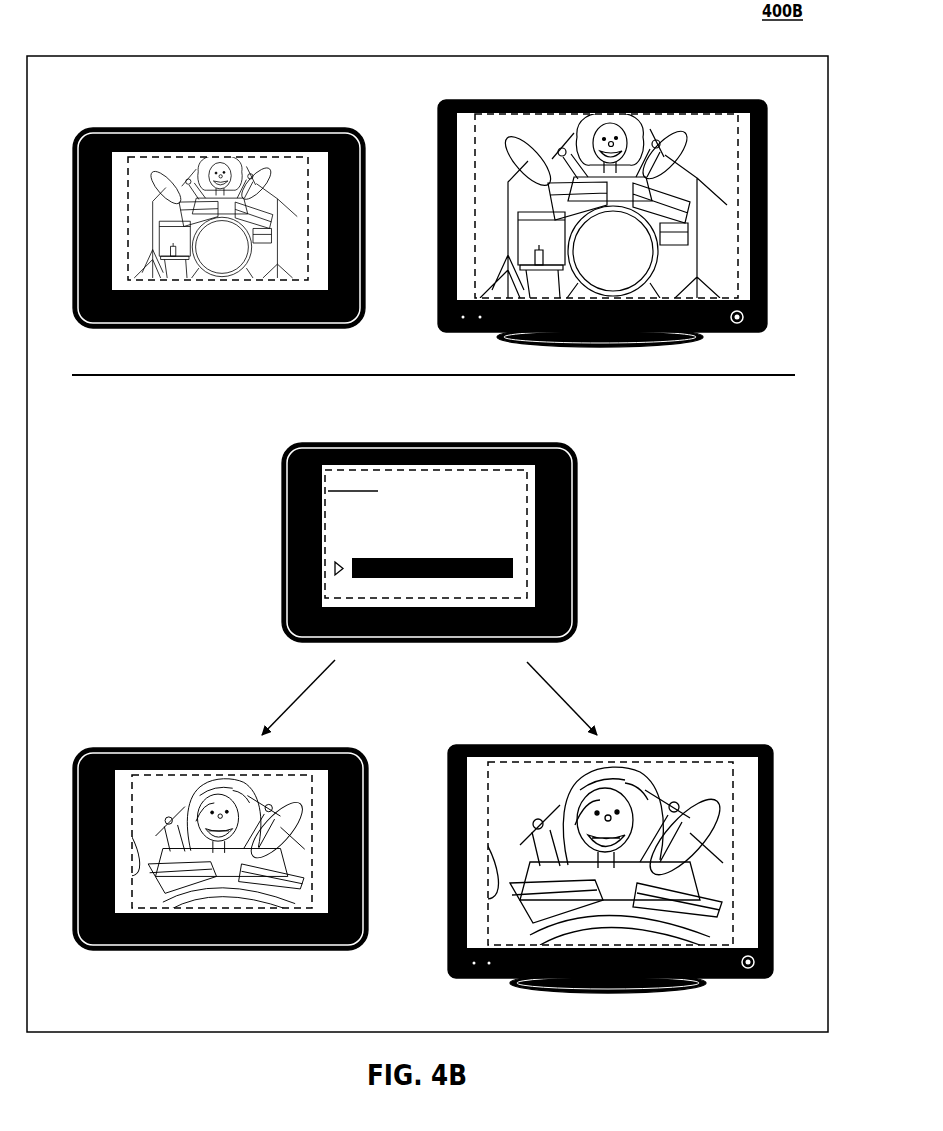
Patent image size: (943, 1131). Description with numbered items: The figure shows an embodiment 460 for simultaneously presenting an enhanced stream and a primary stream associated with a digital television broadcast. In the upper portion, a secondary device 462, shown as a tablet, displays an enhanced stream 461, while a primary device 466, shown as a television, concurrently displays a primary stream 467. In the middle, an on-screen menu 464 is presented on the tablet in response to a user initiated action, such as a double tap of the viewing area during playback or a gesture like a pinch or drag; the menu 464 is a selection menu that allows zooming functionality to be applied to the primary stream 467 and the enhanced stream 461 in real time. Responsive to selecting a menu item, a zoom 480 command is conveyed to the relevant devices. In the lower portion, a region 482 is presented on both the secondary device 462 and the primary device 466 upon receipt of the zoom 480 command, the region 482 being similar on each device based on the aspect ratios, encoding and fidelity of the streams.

The embodiment 460 is at (818, 83).
The enhanced stream 461 is at (308, 203).
The secondary device 462 is at (242, 127).
The on-screen menu 464 is at (527, 485).
The primary device 466 is at (717, 100).
The primary stream 467 is at (740, 188).
The zoom command 480 is at (192, 684).
The region 482 is at (488, 785).